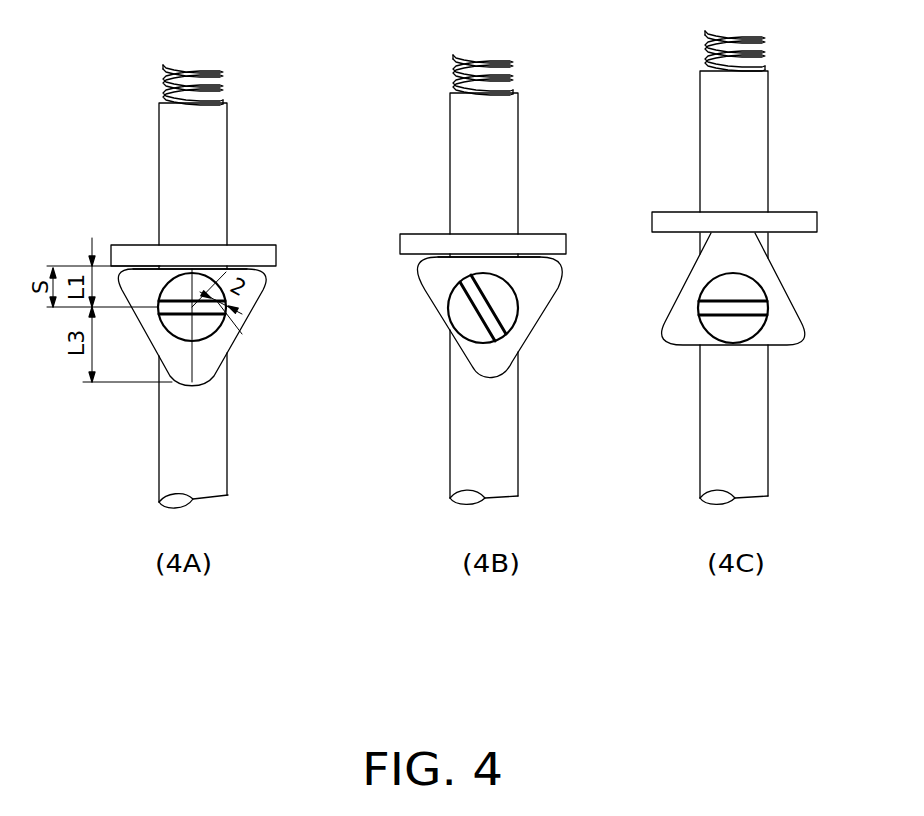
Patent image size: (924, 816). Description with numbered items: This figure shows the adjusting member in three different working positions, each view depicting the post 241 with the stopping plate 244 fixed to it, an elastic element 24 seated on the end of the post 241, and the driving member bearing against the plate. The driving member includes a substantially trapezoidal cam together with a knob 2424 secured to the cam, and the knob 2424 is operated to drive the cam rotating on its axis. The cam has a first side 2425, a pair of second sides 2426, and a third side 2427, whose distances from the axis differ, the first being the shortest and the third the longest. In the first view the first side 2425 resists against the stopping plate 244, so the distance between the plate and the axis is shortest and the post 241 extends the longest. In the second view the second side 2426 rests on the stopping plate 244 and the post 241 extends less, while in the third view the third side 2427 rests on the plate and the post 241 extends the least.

The spring 24 is at (222, 77).
The post 241 is at (208, 426).
The stopping plate 244 is at (253, 255).
The knob 2424 is at (221, 348).
The first side 2425 is at (203, 270).
The second side 2426 is at (484, 253).
The third side 2427 is at (735, 233).